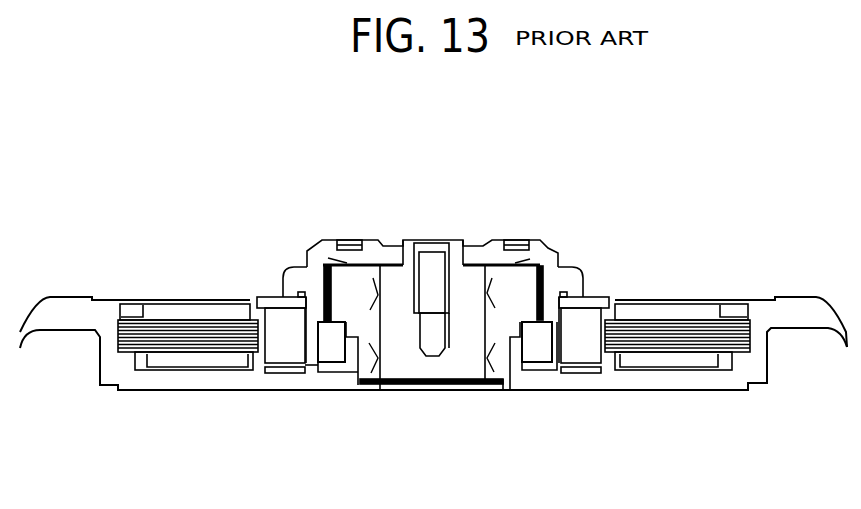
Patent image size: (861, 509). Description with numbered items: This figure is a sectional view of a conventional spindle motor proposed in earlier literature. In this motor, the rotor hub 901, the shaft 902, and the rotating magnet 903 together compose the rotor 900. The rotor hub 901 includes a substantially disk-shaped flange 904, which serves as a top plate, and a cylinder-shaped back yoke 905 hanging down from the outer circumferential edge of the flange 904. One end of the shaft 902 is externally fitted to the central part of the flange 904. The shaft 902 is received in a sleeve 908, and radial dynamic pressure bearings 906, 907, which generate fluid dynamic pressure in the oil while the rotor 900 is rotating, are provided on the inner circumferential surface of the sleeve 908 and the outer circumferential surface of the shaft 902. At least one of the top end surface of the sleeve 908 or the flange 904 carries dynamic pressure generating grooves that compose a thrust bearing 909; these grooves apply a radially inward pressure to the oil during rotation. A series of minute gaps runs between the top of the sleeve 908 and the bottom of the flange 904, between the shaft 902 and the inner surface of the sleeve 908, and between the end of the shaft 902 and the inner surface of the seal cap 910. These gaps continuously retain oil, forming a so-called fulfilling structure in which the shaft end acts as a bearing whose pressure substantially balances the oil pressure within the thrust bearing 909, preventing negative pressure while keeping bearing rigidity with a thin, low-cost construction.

The rotor 900 is at (652, 148).
The rotor hub 901 is at (534, 318).
The shaft 902 is at (457, 318).
The rotating magnet 903 is at (584, 325).
The flange 904 is at (362, 248).
The back yoke 905 is at (312, 288).
The radial dynamic pressure bearing 906 is at (373, 280).
The radial dynamic pressure bearing 907 is at (372, 343).
The sleeve 908 is at (495, 323).
The thrust bearing 909 is at (358, 266).
The seal cap 910 is at (433, 385).